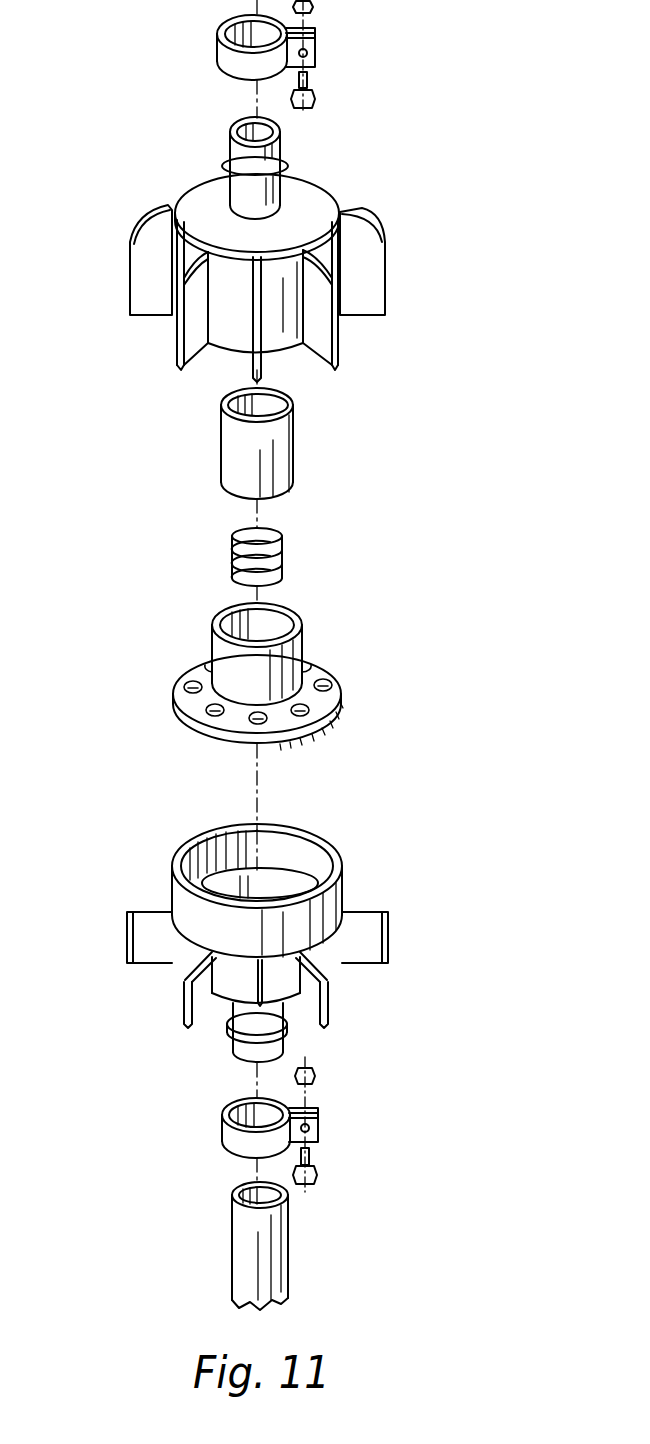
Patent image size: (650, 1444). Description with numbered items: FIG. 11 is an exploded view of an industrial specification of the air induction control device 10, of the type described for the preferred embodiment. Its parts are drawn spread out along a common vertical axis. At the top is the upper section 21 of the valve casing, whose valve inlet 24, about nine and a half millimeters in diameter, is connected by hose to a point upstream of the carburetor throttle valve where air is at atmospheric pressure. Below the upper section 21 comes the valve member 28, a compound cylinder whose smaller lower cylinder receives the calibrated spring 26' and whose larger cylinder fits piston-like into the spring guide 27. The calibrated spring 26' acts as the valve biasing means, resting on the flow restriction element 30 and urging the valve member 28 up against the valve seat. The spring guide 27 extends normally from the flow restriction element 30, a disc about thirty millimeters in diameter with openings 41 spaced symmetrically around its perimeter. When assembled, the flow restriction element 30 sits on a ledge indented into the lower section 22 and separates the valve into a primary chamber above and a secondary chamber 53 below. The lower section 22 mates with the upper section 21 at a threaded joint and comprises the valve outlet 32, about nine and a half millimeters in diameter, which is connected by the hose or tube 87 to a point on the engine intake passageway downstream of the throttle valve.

The air induction control device 10 is at (485, 365).
The upper section 21 is at (225, 318).
The lower section 22 is at (197, 910).
The valve inlet 24 is at (240, 193).
The calibrated spring 26' is at (184, 557).
The spring guide 27 is at (224, 656).
The valve member 28 is at (237, 453).
The flow restriction element 30 is at (320, 667).
The valve outlet 32 is at (235, 1045).
The openings 41 is at (338, 680).
The secondary chamber 53 is at (226, 842).
The hose or tube 87 is at (240, 1248).